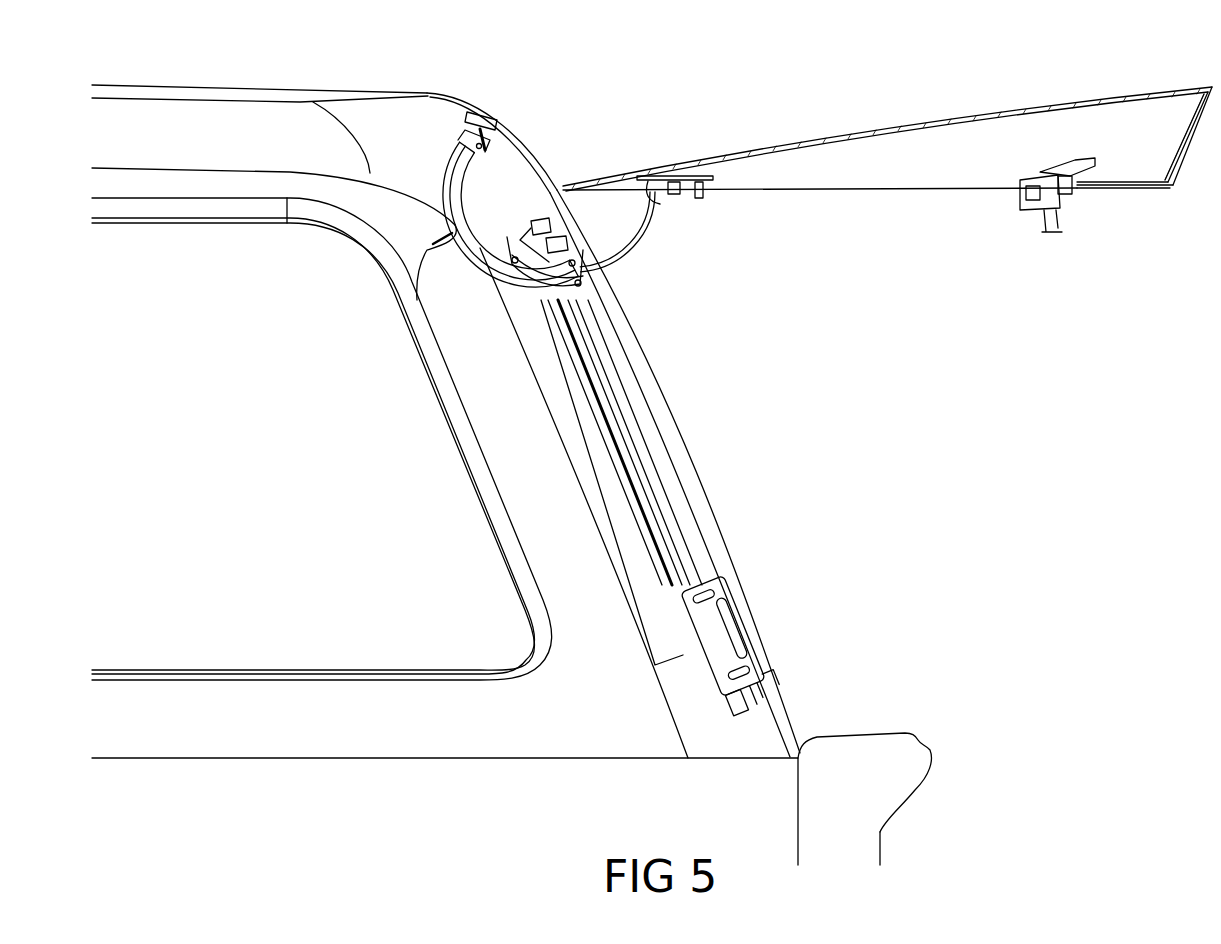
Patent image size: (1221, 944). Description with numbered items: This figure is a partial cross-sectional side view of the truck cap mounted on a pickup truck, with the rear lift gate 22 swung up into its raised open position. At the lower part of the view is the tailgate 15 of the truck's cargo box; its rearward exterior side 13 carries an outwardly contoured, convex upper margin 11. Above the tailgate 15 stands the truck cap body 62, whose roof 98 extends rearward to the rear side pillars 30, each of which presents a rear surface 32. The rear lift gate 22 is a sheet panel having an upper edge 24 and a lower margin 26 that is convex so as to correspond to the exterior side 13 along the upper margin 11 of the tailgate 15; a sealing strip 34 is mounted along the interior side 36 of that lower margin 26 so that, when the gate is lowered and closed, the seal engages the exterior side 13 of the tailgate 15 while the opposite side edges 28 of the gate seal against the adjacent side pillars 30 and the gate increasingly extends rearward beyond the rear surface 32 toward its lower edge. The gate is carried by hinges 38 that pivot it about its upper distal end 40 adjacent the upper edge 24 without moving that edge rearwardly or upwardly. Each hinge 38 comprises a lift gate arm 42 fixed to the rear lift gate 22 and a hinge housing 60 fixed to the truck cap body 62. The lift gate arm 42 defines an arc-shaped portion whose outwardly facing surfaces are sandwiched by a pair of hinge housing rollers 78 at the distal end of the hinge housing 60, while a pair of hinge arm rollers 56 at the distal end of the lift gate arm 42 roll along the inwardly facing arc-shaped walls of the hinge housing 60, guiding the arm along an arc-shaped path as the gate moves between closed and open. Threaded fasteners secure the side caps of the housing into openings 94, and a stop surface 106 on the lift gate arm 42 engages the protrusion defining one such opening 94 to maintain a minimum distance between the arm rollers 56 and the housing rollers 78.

The convex upper margin 11 is at (920, 742).
The exterior side 13 is at (882, 830).
The tailgate 15 is at (812, 815).
The rear lift gate 22 is at (955, 118).
The upper edge 24 is at (576, 178).
The lower margin 26 is at (1212, 86).
The side edges 28 is at (973, 177).
The rear side pillars 30 is at (610, 297).
The rear surface 32 is at (648, 352).
The sealing strip 34 is at (1158, 188).
The interior side 36 is at (1150, 145).
The hinges 38 is at (415, 292).
The upper distal end 40 is at (555, 190).
The lift gate arm 42 is at (630, 246).
The hinge arm rollers 56 is at (510, 270).
The hinge housing 60 is at (467, 194).
The truck cap body 62 is at (292, 84).
The hinge housing rollers 78 is at (582, 247).
The openings 94 is at (552, 335).
The roof 98 is at (192, 94).
The stop surface 106 is at (545, 300).